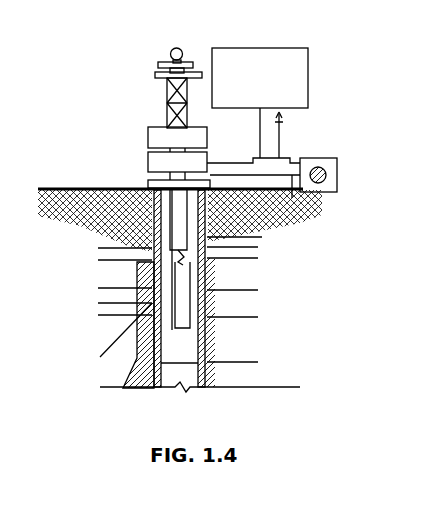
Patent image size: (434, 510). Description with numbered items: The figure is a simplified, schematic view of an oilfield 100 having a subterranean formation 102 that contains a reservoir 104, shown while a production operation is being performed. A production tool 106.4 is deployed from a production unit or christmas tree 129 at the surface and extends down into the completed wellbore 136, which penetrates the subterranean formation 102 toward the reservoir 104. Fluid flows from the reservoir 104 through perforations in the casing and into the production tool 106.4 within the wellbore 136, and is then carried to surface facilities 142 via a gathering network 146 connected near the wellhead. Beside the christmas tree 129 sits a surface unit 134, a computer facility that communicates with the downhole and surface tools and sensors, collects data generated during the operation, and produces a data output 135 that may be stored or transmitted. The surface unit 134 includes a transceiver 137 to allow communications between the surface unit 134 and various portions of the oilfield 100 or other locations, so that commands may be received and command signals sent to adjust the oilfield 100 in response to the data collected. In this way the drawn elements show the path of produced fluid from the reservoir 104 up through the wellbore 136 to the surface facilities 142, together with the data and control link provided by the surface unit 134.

The oilfield 100 is at (98, 101).
The subterranean formation 102 is at (273, 298).
The reservoir 104 is at (248, 360).
The production tool 106.4 is at (100, 303).
The christmas tree 129 is at (171, 50).
The surface unit 134 is at (254, 161).
The data output 135 is at (283, 48).
The completed wellbore 136 is at (234, 259).
The transceiver 137 is at (284, 137).
The surface facilities 142 is at (335, 166).
The gathering network 146 is at (302, 199).